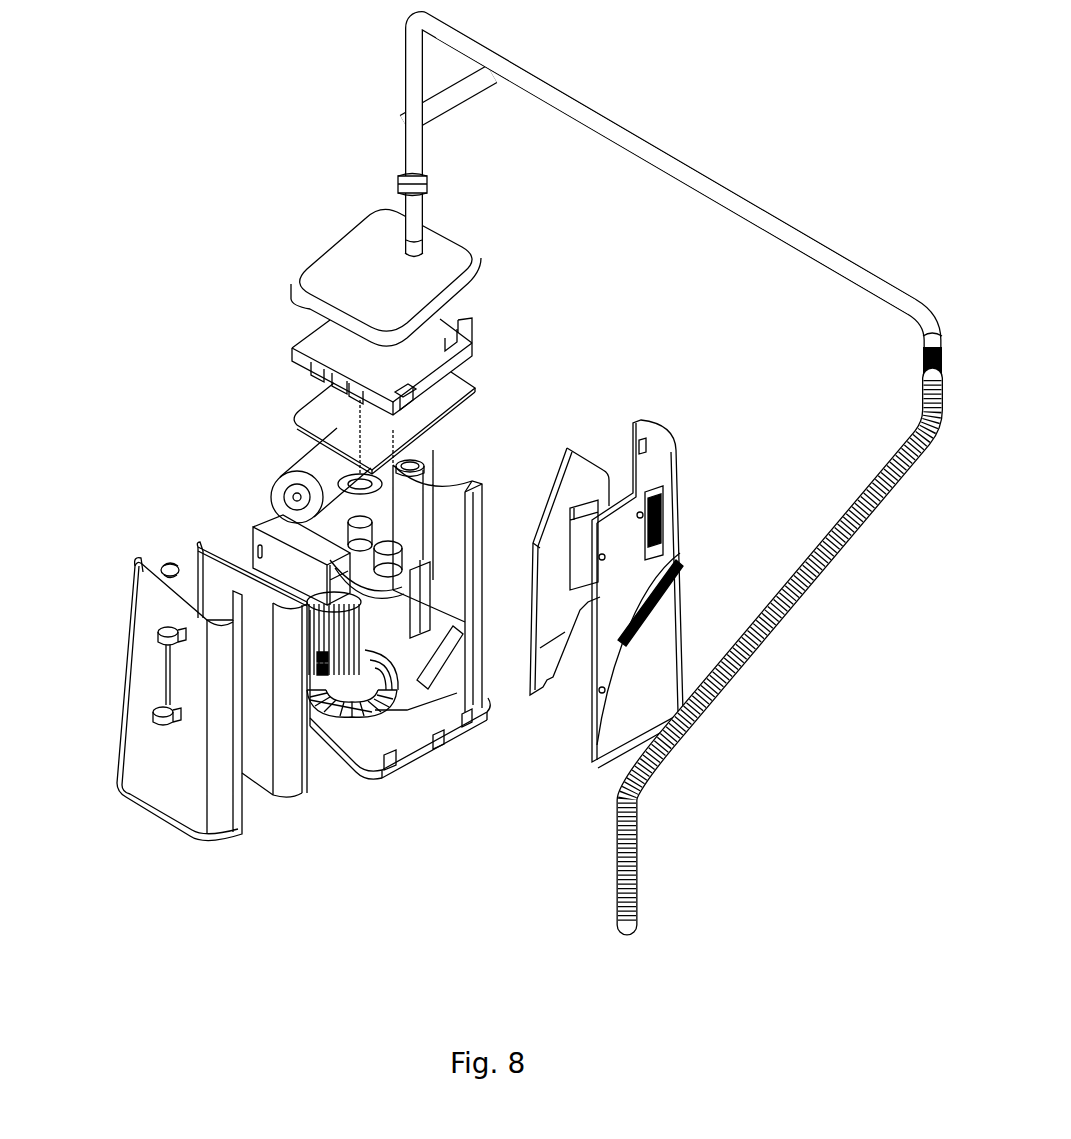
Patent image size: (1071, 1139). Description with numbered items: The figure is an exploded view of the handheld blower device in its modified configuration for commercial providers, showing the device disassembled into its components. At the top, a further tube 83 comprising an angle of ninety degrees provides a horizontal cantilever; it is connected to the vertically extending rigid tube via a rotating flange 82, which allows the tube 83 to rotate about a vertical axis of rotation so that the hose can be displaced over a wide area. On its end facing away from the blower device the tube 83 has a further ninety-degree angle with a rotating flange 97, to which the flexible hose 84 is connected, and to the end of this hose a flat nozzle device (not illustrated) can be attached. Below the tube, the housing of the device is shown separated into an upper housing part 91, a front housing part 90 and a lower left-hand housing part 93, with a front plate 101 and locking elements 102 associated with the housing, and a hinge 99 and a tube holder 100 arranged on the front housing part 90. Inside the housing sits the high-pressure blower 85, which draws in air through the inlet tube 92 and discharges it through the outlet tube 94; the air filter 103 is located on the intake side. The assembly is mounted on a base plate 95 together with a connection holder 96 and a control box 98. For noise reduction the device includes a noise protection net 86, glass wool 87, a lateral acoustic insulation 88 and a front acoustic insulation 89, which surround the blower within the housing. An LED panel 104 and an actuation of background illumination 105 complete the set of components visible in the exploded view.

The rotating flange 82 is at (395, 174).
The tube 83 is at (402, 65).
The hose 84 is at (764, 645).
The high-pressure blower 85 is at (345, 700).
The noise protection net 86 is at (288, 409).
The glass wool 87 is at (288, 347).
The lateral acoustic insulation 88 is at (540, 702).
The front acoustic insulation 89 is at (293, 800).
The front housing part 90 is at (122, 635).
The upper housing part 91 is at (288, 272).
The inlet tube 92 is at (393, 460).
The lower left-hand housing part 93 is at (690, 600).
The outlet tube 94 is at (405, 398).
The base plate 95 is at (372, 775).
The connection holder 96 is at (476, 483).
The rotating flange 97 is at (922, 357).
The control box 98 is at (248, 533).
The hinge 99 is at (160, 567).
The tube holder 100 is at (150, 722).
The front plate 101 is at (660, 540).
The locking elements 102 is at (606, 691).
The air filter 103 is at (268, 483).
The LED panel 104 is at (432, 750).
The actuation of background illumination 105 is at (645, 515).